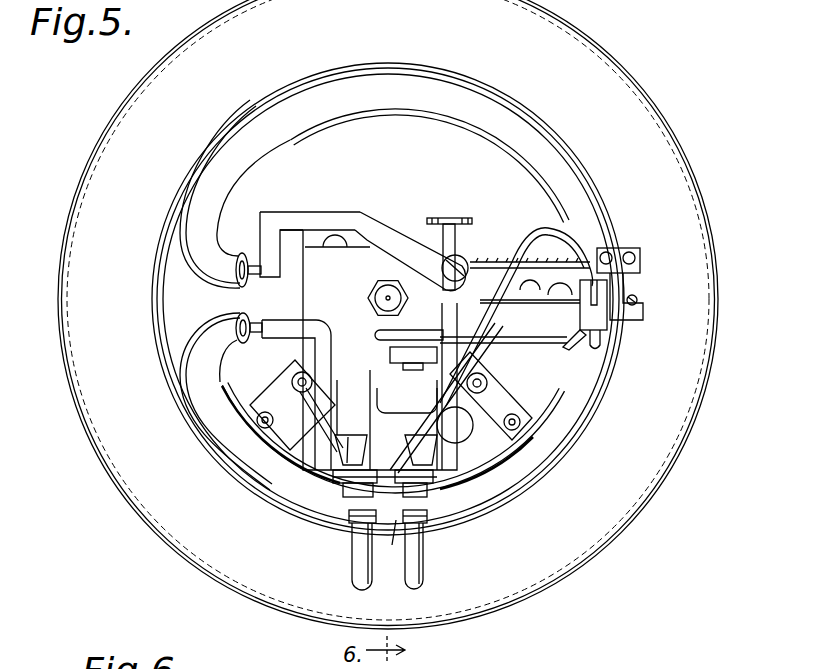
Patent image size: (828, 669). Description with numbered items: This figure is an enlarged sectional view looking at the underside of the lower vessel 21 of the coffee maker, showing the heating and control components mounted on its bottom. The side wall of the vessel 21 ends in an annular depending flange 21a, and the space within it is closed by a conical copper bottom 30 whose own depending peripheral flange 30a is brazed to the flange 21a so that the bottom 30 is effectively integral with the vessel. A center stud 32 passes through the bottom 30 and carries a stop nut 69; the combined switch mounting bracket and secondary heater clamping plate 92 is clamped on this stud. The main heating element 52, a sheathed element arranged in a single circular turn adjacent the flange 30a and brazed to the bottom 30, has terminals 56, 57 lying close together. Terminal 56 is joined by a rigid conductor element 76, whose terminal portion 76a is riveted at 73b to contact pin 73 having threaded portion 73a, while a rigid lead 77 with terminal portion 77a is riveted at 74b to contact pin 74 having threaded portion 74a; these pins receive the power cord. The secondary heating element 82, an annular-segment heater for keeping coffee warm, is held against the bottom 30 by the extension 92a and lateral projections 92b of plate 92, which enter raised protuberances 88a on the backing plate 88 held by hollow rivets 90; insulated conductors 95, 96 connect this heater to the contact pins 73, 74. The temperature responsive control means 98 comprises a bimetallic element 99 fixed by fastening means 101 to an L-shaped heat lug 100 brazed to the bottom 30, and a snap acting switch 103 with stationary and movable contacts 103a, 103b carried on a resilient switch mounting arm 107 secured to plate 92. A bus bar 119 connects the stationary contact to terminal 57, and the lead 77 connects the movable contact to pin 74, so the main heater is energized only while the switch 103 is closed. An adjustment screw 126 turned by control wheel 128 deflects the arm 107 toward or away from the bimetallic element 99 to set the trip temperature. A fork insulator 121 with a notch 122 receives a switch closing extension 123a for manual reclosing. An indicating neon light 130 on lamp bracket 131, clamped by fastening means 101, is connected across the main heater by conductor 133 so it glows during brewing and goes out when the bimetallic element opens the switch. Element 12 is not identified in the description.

The vessel 21 is at (88, 174).
The annular depending flange 21a is at (158, 244).
The bottom 30 is at (356, 161).
The depending peripheral flange 30a is at (165, 283).
The main heating element 52 is at (414, 82).
The terminal 57 is at (245, 256).
The terminal 56 is at (244, 312).
The bus bar 119 is at (300, 220).
The combined switch mounting bracket and secondary heater clamping plate 92 is at (312, 297).
The extension 92a is at (365, 398).
The lateral projections 92b is at (340, 407).
The switch mounting arm 107 is at (372, 236).
The adjustment screw 126 is at (451, 219).
The control wheel 128 is at (453, 213).
The temperature responsive control means 98 is at (500, 250).
The conductor 133 is at (540, 236).
The snap acting switch 103 is at (590, 266).
The stationary contact 103a is at (555, 271).
The movable contact 103b is at (535, 305).
The fork insulator 121 is at (641, 257).
The switch closing extension 123a is at (636, 296).
The notch or recess 122 is at (608, 300).
The indicating light 130 is at (604, 339).
The lamp bracket 131 is at (590, 343).
The bimetallic element 99 is at (530, 344).
The secondary heating element 82 is at (468, 388).
The backing plate 88 is at (505, 400).
The insulated conductor 96 is at (470, 408).
The hollow rivets 90 is at (300, 447).
The insulated conductor 95 is at (270, 427).
The link 12 is at (286, 393).
The raised protuberances 88a is at (332, 481).
The rigid conductor element 76 is at (288, 338).
The terminal portion 76a is at (345, 488).
The riveted end 73b is at (338, 448).
The riveted end 74b is at (415, 462).
The rigid lead 77 is at (435, 478).
The threaded portion 73a is at (350, 517).
The contact pin 73 is at (352, 570).
The terminal portion 77a is at (395, 543).
The threaded portion 74a is at (428, 517).
The contact pin 74 is at (424, 569).
The stop nut 69 is at (368, 299).
The center stud 32 is at (386, 291).
The heat lug 100 is at (392, 339).
The fastening means 101 is at (420, 366).